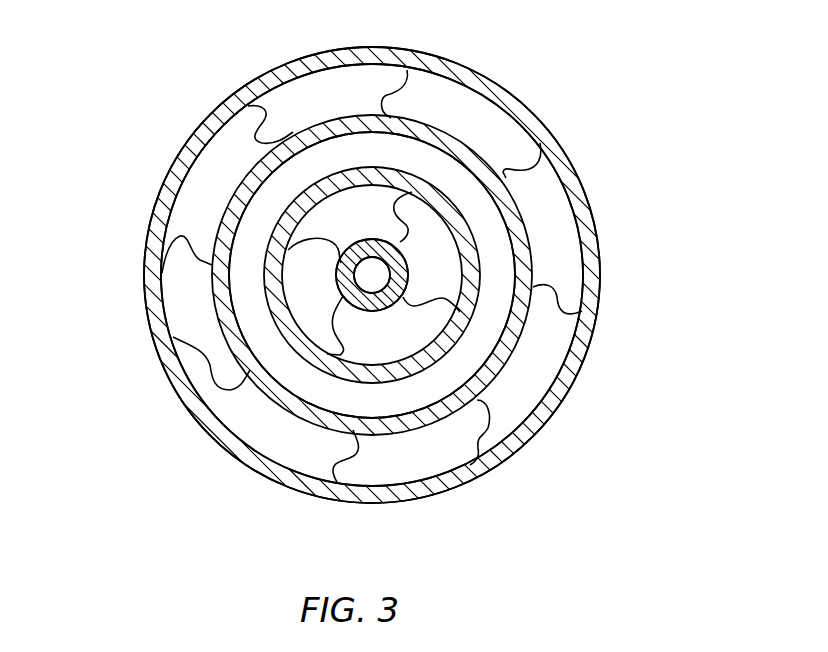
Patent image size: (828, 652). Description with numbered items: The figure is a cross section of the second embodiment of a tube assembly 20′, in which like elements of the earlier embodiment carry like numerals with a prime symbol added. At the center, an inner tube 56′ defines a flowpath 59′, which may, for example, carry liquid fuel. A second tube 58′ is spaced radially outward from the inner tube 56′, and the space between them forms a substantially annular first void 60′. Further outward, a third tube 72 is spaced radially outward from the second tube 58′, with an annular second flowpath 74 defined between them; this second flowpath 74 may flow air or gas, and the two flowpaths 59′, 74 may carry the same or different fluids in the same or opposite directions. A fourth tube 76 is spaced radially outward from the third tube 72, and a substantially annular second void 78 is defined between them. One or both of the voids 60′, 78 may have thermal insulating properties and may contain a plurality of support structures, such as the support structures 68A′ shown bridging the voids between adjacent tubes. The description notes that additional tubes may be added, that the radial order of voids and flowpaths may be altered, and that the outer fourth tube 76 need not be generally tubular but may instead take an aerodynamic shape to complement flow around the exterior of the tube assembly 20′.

The tube assembly 20′ is at (548, 80).
The inner tube 56′ is at (378, 312).
The second tube 58′ is at (480, 280).
The flowpath 59′ is at (372, 270).
The first void 60′ is at (410, 269).
The support structures 68A′ is at (178, 342).
The third tube 72 is at (523, 337).
The second flowpath 74 is at (468, 357).
The fourth tube 76 is at (548, 416).
The second void 78 is at (467, 445).